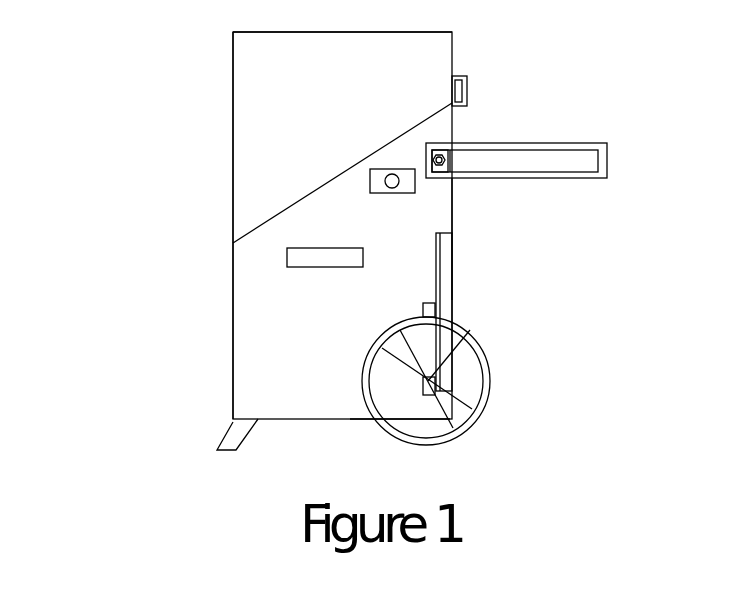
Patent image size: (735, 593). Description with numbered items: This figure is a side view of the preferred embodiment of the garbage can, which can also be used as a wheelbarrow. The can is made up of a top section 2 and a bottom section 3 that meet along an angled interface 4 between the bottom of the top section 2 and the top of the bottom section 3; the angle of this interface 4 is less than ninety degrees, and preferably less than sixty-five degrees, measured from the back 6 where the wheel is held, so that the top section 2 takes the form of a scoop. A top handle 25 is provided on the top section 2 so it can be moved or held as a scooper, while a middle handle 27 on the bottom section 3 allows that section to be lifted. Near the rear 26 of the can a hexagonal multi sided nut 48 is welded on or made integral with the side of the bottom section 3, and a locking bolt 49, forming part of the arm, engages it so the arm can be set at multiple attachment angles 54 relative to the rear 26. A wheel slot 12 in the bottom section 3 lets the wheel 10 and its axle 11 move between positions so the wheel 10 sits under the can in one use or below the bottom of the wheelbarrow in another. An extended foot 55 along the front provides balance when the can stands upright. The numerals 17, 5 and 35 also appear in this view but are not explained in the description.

The top section 2 is at (265, 77).
The top wall 17 is at (435, 30).
The side wall 5 is at (233, 132).
The interface 4 is at (285, 212).
The control panel 35 is at (369, 159).
The middle handle 27 is at (305, 257).
The bottom section 3 is at (263, 350).
The extended foot 55 is at (228, 433).
The top handle 25 is at (467, 88).
The rear of the can 26 is at (603, 168).
The locking bolt 49 is at (440, 150).
The multi sided nut 48 is at (467, 138).
The attachment angles 54 is at (452, 205).
The back 6 is at (471, 235).
The wheel slot 12 is at (440, 296).
The wheel 10 is at (488, 395).
The axle 11 is at (430, 370).